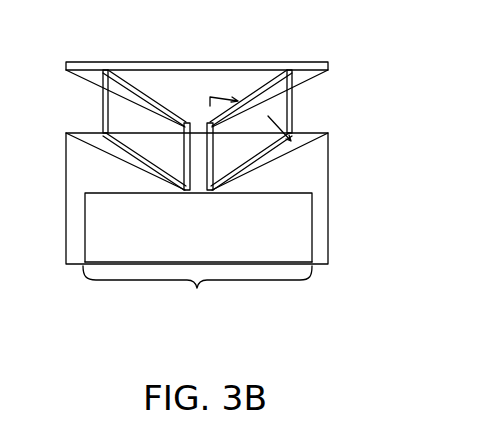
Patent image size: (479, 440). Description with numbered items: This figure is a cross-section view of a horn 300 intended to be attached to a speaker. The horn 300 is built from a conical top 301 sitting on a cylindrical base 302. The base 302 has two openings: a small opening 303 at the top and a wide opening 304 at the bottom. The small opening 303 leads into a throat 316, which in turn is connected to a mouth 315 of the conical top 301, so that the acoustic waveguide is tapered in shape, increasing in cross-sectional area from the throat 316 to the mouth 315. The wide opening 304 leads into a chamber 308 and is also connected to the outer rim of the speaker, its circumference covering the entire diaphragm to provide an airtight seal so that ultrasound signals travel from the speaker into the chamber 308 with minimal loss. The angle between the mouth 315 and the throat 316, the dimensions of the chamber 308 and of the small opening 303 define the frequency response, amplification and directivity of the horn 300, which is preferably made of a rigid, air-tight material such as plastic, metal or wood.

The horn 300 is at (387, 84).
The conical top 301 is at (232, 73).
The cylindrical base 302 is at (328, 158).
The small opening 303 is at (199, 193).
The wide opening 304 is at (197, 293).
The chamber 308 is at (208, 249).
The mouth 315 is at (292, 103).
The throat 316 is at (184, 150).